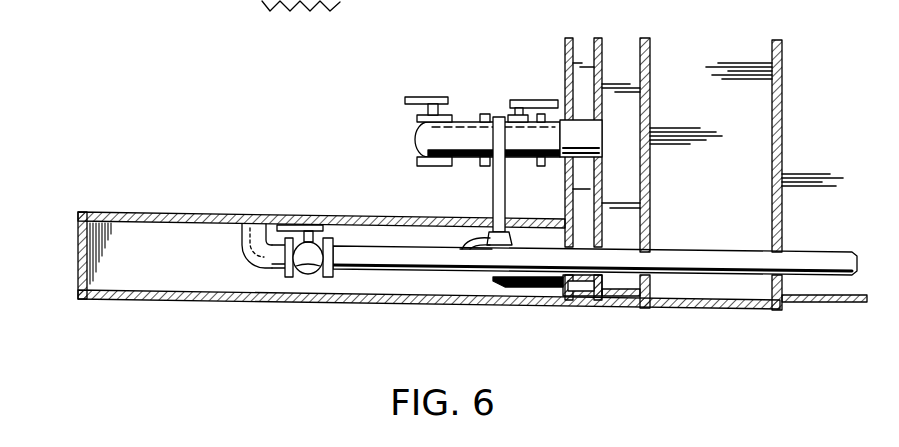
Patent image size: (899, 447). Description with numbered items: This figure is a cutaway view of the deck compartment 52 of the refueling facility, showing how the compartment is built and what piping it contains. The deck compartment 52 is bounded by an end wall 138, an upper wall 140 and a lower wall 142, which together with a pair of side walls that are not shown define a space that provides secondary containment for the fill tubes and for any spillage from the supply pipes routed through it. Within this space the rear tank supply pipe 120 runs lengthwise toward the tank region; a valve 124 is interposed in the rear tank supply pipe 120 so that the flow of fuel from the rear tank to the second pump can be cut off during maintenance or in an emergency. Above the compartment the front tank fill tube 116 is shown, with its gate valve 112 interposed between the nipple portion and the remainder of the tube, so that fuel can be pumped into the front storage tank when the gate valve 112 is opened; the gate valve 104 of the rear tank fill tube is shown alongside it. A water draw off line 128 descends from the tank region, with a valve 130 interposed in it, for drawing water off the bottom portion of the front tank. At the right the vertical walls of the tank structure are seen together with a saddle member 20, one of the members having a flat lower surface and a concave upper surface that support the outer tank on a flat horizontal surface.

The saddle member 20 is at (783, 100).
The deck compartment 52 is at (400, 244).
The gate valve 104 is at (532, 98).
The gate valve 112 is at (427, 97).
The front tank fill tube 116 is at (468, 118).
The rear tank supply pipe 120 is at (687, 247).
The valve 124 is at (310, 264).
The water draw off line 128 is at (497, 193).
The valve 130 is at (460, 247).
The end wall 138 is at (78, 265).
The upper wall 140 is at (172, 213).
The lower wall 142 is at (162, 302).